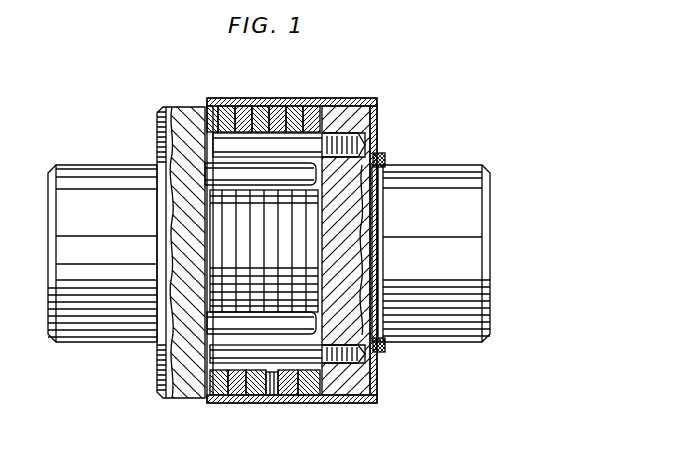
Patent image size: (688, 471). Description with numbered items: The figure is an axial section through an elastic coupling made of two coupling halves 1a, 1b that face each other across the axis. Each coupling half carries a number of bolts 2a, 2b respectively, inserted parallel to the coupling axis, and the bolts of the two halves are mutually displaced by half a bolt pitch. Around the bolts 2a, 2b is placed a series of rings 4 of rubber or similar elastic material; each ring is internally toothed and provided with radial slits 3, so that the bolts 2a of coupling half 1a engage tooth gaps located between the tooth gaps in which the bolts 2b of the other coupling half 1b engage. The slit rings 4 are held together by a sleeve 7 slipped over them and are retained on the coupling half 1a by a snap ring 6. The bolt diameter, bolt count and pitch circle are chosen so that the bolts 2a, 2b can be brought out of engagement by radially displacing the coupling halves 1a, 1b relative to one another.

The coupling half 1a is at (347, 398).
The coupling half 1b is at (157, 368).
The bolts 2a is at (240, 397).
The bolts 2b is at (193, 396).
The radial slits 3 is at (208, 105).
The rings 4 is at (257, 100).
The snap ring 6 is at (386, 347).
The sleeve 7 is at (273, 397).